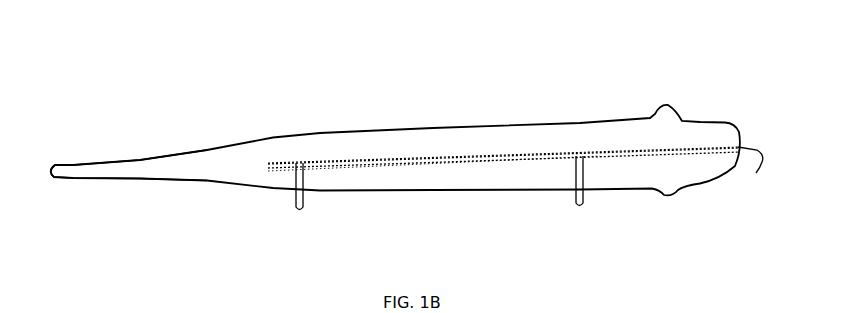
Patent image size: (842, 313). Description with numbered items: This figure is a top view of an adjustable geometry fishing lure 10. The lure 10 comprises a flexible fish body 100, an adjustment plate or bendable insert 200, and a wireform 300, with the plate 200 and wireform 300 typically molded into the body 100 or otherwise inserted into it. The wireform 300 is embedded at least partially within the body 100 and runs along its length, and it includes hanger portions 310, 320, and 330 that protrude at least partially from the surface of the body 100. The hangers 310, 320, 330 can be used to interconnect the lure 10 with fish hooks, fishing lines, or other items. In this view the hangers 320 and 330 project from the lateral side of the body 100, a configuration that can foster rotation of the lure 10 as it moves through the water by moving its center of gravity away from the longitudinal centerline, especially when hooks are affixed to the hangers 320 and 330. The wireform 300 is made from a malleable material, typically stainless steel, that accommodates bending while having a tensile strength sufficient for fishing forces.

The adjustable geometry fishing lure 10 is at (610, 80).
The flexible fish body 100 is at (202, 172).
The bendable insert 200 is at (483, 164).
The wireform 300 is at (408, 163).
The hanger portion 310 is at (762, 162).
The hanger portion 320 is at (586, 202).
The hanger portion 330 is at (308, 212).